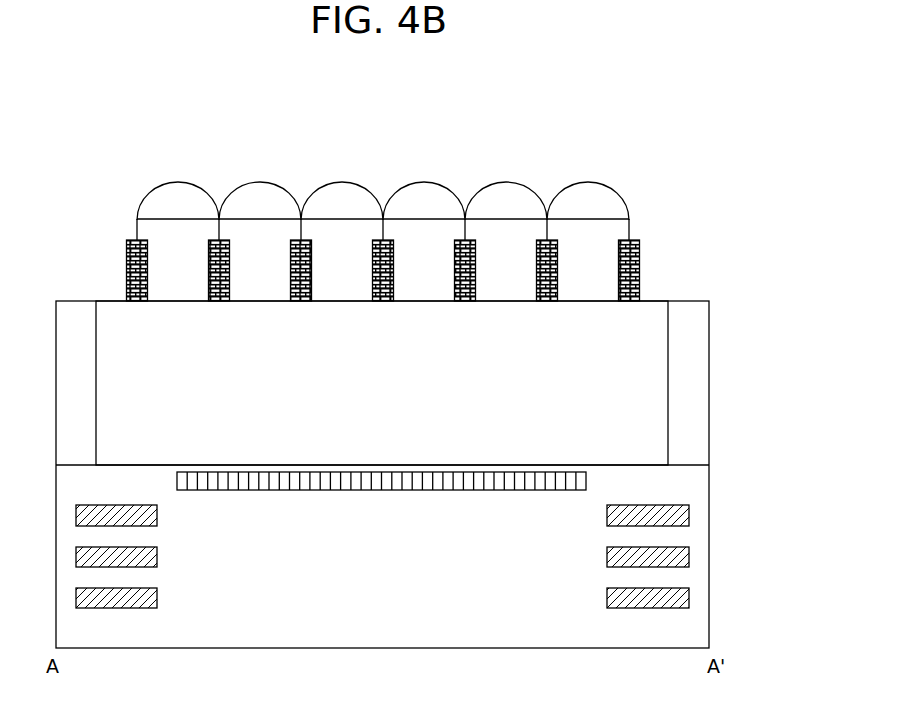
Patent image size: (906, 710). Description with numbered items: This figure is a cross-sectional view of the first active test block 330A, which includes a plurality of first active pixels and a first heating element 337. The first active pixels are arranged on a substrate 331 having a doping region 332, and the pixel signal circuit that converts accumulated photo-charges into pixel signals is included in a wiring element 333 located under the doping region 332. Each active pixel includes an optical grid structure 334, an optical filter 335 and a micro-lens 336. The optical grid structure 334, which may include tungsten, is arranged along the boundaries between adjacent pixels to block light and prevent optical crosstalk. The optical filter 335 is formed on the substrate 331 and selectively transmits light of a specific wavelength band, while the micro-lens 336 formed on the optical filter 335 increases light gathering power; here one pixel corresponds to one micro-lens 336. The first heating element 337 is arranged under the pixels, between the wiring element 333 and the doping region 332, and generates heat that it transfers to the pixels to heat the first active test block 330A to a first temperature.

The first active test block 330A is at (103, 126).
The substrate 331 is at (700, 420).
The doping region 332 is at (657, 365).
The wiring element 333 is at (683, 512).
The optical grid structure 334 is at (628, 262).
The optical filter 335 is at (620, 225).
The micro-lens 336 is at (610, 192).
The first heating element 337 is at (335, 490).